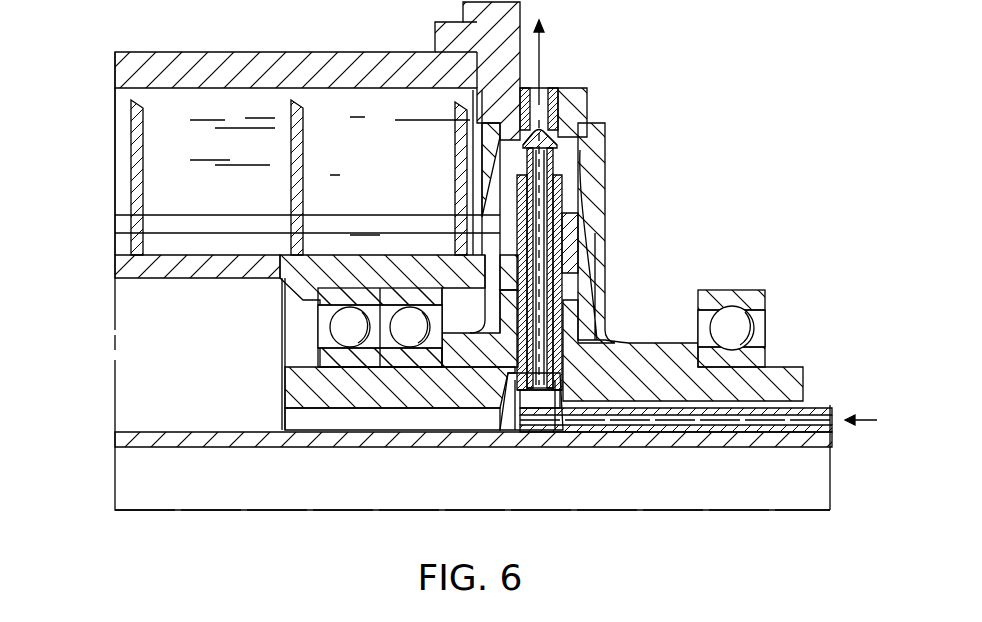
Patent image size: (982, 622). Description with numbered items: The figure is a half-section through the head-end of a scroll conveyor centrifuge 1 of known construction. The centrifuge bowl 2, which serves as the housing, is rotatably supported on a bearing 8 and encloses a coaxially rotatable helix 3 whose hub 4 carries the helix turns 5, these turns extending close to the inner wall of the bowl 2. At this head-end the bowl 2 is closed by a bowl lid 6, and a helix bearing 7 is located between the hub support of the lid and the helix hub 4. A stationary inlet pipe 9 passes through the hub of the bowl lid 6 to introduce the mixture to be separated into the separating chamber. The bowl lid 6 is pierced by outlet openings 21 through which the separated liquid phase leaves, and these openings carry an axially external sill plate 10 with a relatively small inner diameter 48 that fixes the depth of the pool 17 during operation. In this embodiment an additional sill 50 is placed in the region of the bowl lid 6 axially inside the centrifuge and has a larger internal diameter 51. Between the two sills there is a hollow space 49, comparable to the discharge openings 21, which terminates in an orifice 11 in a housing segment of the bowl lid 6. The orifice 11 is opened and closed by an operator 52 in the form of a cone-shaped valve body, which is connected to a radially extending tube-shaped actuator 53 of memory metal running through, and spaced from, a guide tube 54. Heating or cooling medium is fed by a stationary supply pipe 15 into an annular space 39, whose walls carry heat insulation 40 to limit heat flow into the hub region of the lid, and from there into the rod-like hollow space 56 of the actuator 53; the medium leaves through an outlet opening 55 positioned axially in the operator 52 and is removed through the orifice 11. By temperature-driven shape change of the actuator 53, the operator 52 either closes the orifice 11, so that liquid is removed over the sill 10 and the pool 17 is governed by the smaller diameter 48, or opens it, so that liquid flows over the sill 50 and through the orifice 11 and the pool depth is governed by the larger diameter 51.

The scroll conveyor centrifuge 1 is at (712, 238).
The centrifuge bowl 2 is at (277, 62).
The helix 3 is at (127, 172).
The hub 4 is at (125, 262).
The helix turns 5 is at (134, 205).
The bowl lid 6 is at (300, 386).
The helix bearing 7 is at (337, 327).
The bearing 8 is at (745, 328).
The inlet pipe 9 is at (768, 446).
The sill plate 10 is at (603, 163).
The orifice 11 is at (545, 102).
The supply pipe 15 is at (818, 407).
The pool 17 is at (337, 145).
The outlet openings 21 is at (574, 190).
The annular space 39 is at (528, 393).
The heat insulation 40 is at (500, 396).
The smaller inner diameter 48 is at (330, 235).
The hollow space 49 is at (512, 147).
The additional sill 50 is at (490, 150).
The larger internal diameter 51 is at (386, 218).
The operator 52 is at (603, 143).
The actuator 53 is at (552, 258).
The guide tube 54 is at (565, 215).
The outlet opening 55 is at (532, 137).
The rod-like hollow space 56 is at (558, 283).